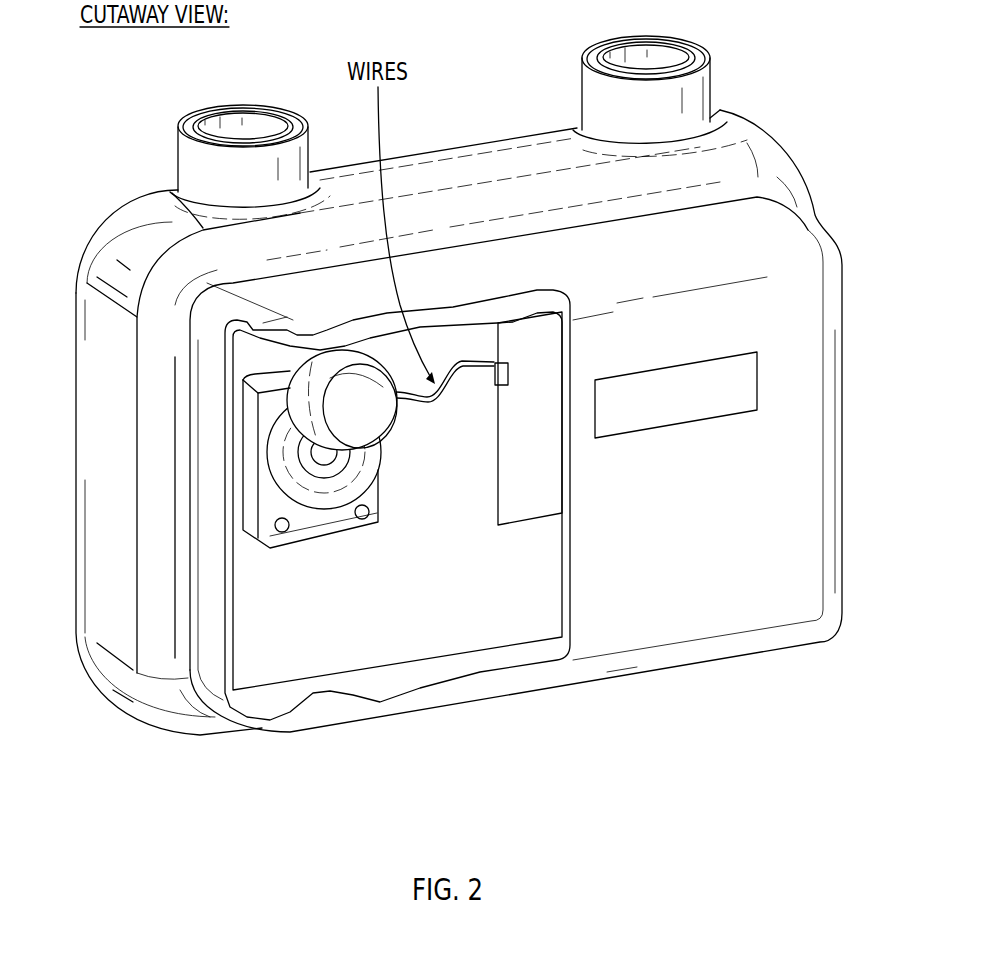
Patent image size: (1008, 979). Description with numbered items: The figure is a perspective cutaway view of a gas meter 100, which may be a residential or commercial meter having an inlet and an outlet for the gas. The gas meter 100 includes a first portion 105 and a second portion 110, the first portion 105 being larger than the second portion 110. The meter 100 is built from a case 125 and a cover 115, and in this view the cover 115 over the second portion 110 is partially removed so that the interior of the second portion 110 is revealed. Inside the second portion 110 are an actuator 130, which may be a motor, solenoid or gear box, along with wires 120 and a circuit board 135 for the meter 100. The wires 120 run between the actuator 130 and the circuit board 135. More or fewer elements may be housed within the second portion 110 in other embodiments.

The gas meter 100 is at (855, 57).
The first portion 105 is at (97, 410).
The second portion 110 is at (802, 483).
The cover 115 is at (805, 258).
The wires 120 is at (485, 111).
The case 125 is at (106, 625).
The actuator 130 is at (337, 548).
The circuit board 135 is at (537, 510).